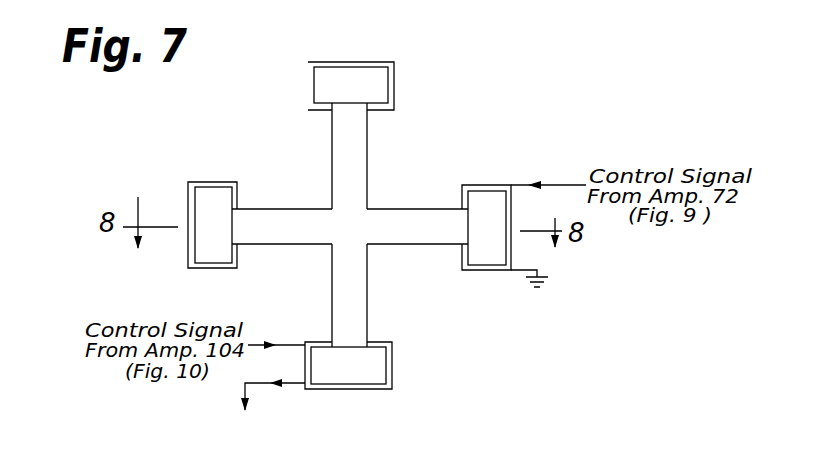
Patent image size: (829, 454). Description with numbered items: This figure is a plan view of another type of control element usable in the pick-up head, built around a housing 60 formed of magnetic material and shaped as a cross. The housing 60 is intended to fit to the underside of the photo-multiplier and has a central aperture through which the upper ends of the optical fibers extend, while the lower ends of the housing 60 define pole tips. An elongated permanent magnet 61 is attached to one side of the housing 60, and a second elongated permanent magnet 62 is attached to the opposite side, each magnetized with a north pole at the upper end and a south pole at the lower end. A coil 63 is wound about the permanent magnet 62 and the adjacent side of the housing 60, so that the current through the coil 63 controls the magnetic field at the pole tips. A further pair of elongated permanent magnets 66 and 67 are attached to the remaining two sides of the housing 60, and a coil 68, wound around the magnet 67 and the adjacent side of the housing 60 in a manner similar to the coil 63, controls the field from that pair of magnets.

The housing 60 is at (437, 208).
The elongated permanent magnet 61 is at (211, 198).
The second elongated permanent magnet 62 is at (483, 250).
The coil 63 is at (493, 271).
The elongated permanent magnet 66 is at (372, 82).
The elongated permanent magnet 67 is at (348, 370).
The coil 68 is at (392, 367).